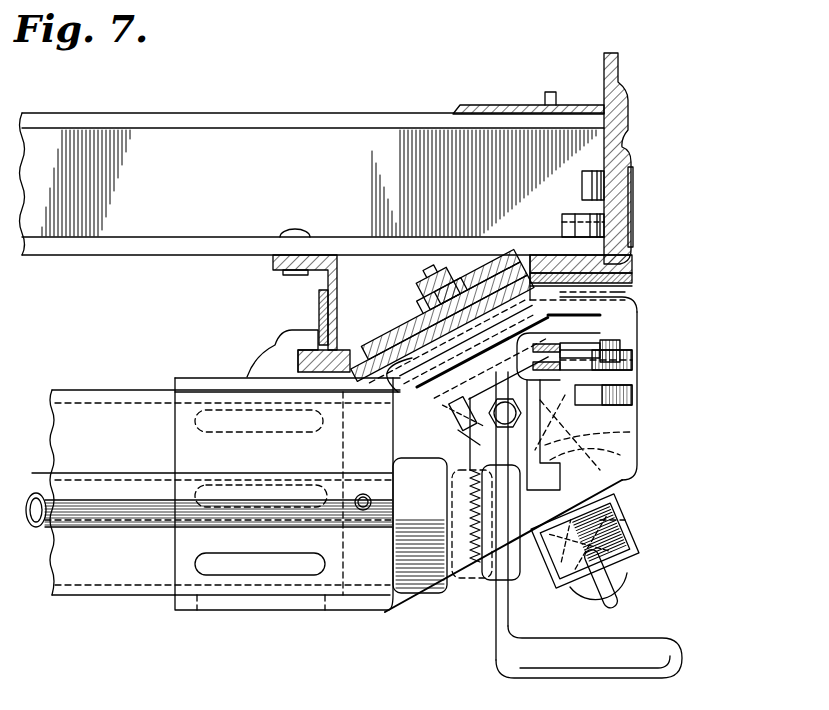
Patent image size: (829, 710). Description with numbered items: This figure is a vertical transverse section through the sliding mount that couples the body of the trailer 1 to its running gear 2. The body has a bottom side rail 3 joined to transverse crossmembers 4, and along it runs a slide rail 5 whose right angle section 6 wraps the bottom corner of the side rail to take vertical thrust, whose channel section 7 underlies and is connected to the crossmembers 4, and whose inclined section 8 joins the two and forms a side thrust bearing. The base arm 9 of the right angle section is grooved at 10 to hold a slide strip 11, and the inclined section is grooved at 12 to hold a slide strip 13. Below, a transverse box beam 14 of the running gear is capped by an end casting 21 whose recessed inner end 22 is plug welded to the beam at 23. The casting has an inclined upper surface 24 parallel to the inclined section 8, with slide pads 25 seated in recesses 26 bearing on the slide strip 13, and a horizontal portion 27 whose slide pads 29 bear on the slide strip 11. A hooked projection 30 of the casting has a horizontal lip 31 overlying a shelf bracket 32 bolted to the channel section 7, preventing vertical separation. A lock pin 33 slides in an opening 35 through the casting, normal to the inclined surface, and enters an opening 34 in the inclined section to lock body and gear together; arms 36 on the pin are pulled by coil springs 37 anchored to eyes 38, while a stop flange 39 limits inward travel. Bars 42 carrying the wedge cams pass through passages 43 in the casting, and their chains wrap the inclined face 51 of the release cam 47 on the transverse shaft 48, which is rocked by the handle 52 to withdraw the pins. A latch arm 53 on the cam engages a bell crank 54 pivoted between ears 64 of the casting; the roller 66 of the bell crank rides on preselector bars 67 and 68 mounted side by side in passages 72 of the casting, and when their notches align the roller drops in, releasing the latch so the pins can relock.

The trailer 1 is at (509, 107).
The running gear 2 is at (612, 486).
The side rails 3 is at (604, 152).
The crossmembers 4 is at (210, 125).
The slide rails 5 is at (630, 256).
The right angle sections 6 is at (632, 191).
The channel sections 7 is at (340, 314).
The inclined sections 8 is at (382, 338).
The base arms 9 is at (552, 262).
The groove 10 is at (626, 266).
The slide strip 11 is at (640, 280).
The groove 12 is at (406, 332).
The slide strips 13 is at (490, 291).
The box beams 14 is at (106, 574).
The end castings 21 is at (410, 560).
The recessed inner ends 22 is at (222, 606).
The plug weld 23 is at (288, 562).
The inclined upper surface 24 is at (418, 398).
The slide pads 25 is at (404, 382).
The recesses 26 is at (505, 392).
The horizontal portions 27 is at (636, 300).
The slide pads 29 is at (612, 294).
The hooked projection 30 is at (272, 369).
The horizontal lip 31 is at (298, 346).
The shelf bracket 32 is at (331, 331).
The lock pins 33 is at (634, 552).
The openings 34 is at (458, 291).
The openings 35 is at (486, 418).
The arms 36 is at (622, 608).
The coil springs 37 is at (628, 520).
The eyes 38 is at (577, 432).
The stop flanges 39 is at (630, 436).
The bars 42 is at (459, 428).
The passages 43 is at (455, 418).
The release cam 47 is at (512, 586).
The shaft 48 is at (100, 473).
The inclined face 51 is at (472, 468).
The handle 52 is at (496, 648).
The latch arm 53 is at (604, 486).
The bell crank 54 is at (548, 392).
The ears 64 is at (628, 362).
The roller 66 is at (600, 342).
The preselector bar 67 is at (540, 346).
The preselector bar 68 is at (576, 344).
The passages 72 is at (577, 292).